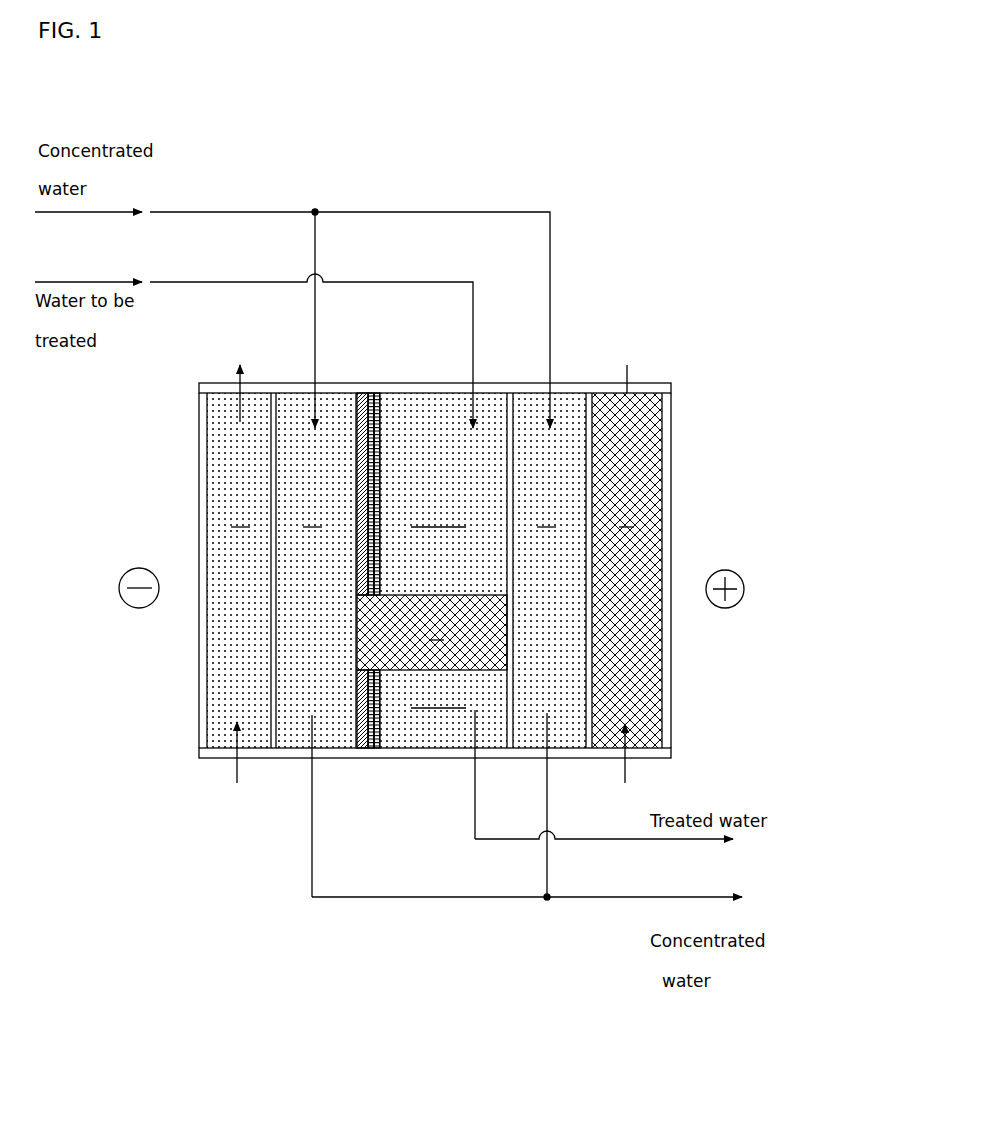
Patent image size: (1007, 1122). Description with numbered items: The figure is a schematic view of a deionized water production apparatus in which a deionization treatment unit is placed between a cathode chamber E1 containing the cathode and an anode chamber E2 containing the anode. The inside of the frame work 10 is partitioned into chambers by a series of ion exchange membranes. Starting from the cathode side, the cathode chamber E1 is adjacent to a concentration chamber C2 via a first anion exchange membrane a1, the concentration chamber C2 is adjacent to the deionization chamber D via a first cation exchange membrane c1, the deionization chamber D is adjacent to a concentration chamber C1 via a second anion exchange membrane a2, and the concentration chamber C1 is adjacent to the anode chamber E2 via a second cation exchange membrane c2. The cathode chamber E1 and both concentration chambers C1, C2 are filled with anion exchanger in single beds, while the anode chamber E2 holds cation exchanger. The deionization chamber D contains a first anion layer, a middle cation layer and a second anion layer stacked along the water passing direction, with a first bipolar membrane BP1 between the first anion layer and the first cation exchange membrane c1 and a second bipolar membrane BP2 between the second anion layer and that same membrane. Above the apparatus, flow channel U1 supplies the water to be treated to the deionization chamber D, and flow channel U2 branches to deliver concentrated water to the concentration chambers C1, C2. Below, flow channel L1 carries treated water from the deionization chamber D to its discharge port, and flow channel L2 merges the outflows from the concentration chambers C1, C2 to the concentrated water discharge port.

The frame work 10 is at (199, 416).
The flow channel U1 is at (226, 282).
The flow channel U2 is at (440, 212).
The cathode chamber E1 is at (208, 393).
The anode chamber E2 is at (656, 393).
The concentration chamber C1 is at (572, 393).
The concentration chamber C2 is at (276, 393).
The deionization chamber D is at (432, 393).
The first bipolar membrane BP1 is at (388, 331).
The second bipolar membrane BP2 is at (360, 758).
The first anion exchange membrane a1 is at (255, 752).
The second anion exchange membrane a2 is at (598, 665).
The first cation exchange membrane c1 is at (338, 752).
The second cation exchange membrane c2 is at (575, 752).
The flow channel L1 is at (505, 840).
The flow channel L2 is at (360, 897).